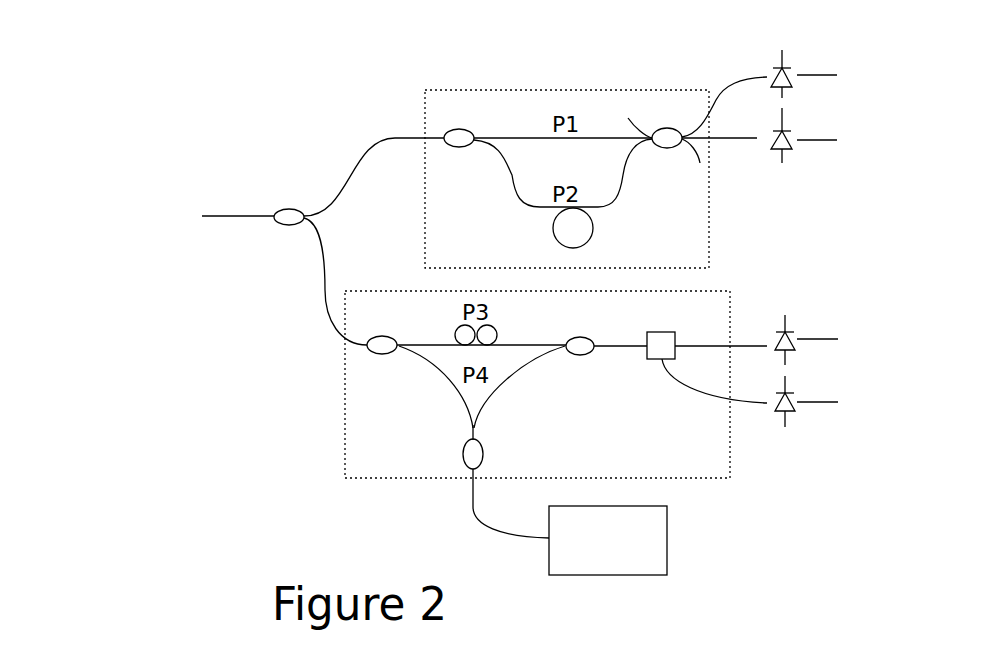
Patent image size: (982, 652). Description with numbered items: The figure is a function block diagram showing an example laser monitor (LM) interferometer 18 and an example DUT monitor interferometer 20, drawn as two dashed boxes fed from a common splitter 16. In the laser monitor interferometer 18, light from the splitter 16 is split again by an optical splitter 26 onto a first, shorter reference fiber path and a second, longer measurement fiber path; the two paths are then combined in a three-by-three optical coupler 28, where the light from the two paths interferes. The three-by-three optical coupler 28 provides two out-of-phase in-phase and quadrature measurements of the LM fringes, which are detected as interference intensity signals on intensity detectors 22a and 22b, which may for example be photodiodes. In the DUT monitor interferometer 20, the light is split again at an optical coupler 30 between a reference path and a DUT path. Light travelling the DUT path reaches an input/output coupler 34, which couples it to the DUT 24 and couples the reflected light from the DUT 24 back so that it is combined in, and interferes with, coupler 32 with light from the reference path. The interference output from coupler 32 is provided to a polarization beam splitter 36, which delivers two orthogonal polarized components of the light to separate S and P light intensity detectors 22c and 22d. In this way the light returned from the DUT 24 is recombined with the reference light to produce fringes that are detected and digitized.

The splitter 16 is at (288, 208).
The laser monitor (LM) interferometer 18 is at (548, 90).
The DUT monitor interferometer 20 is at (735, 452).
The intensity detector 22a is at (782, 68).
The intensity detector 22b is at (787, 130).
The S light intensity detector 22c is at (793, 328).
The P light intensity detector 22d is at (793, 392).
The DUT 24 is at (667, 540).
The optical splitter 26 is at (452, 130).
The 3×3 optical coupler 28 is at (665, 128).
The optical coupler 30 is at (377, 357).
The coupler 32 is at (575, 334).
The input/output coupler 34 is at (463, 450).
The polarization beam splitter (PBS) 36 is at (675, 337).